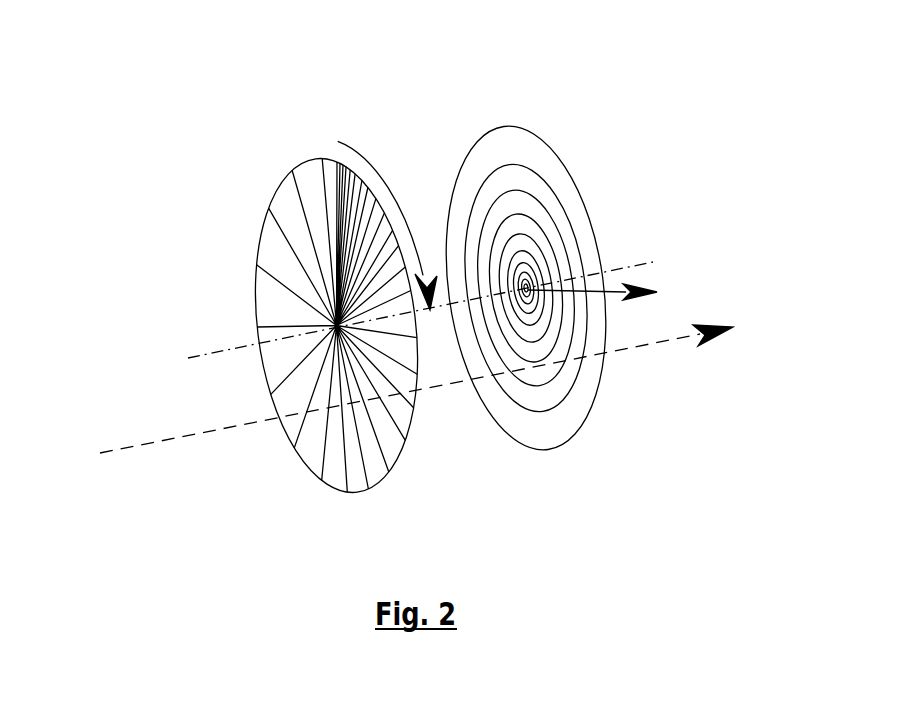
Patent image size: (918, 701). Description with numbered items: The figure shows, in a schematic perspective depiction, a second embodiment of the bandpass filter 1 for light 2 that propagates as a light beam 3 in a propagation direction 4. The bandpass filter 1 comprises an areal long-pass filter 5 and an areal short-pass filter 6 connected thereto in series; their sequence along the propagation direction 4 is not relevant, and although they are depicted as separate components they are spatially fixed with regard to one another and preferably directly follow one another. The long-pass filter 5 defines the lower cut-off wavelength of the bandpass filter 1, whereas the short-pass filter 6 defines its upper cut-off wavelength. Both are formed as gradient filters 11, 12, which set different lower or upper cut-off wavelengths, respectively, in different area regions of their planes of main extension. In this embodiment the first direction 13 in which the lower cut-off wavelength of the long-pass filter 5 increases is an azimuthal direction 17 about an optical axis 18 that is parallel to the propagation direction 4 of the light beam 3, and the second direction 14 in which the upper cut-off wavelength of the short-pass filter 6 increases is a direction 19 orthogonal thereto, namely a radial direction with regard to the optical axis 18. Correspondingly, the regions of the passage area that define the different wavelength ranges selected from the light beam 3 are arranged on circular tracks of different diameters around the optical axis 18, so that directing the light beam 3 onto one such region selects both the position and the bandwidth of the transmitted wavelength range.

The bandpass filter 1 is at (576, 93).
The light 2 is at (400, 451).
The light beam 3 is at (163, 455).
The propagation direction 4 is at (714, 338).
The long-pass filter 5 is at (336, 370).
The gradient filter 11 is at (322, 500).
The short-pass filter 6 is at (526, 335).
The gradient filter 12 is at (522, 462).
The first direction 13 is at (389, 198).
The azimuthal direction 17 is at (375, 165).
The second direction 14 is at (648, 276).
The radial direction 19 is at (603, 290).
The optical axis 18 is at (219, 352).